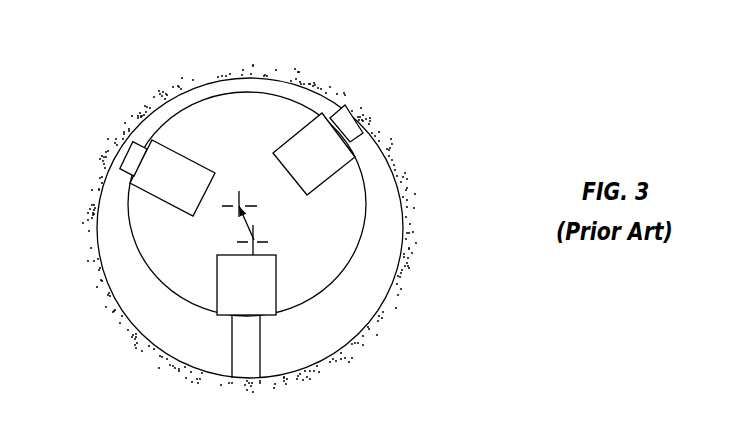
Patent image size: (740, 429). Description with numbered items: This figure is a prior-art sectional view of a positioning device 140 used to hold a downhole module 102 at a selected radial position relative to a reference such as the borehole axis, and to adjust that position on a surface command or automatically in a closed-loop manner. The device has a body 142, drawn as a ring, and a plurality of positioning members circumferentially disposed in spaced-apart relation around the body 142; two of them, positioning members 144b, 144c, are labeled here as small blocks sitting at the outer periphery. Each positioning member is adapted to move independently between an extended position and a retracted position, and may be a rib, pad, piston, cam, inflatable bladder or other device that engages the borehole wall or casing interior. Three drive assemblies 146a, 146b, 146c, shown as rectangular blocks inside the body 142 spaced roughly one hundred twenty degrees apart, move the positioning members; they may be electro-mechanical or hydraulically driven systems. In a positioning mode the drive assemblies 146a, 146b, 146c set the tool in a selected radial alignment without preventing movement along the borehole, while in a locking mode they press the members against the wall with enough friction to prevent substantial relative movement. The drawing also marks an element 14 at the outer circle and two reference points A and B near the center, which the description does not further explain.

The positioning device 140 is at (177, 98).
The outer wall of holder 14 is at (385, 303).
The module 102 is at (383, 242).
The body 142 is at (260, 95).
The drive assembly 146a is at (132, 157).
The drive assembly 146b is at (260, 298).
The drive assembly 146c is at (310, 135).
The positioning member 144b is at (237, 352).
The positioning member 144c is at (352, 127).
The center point A is at (254, 241).
The center point B is at (252, 223).